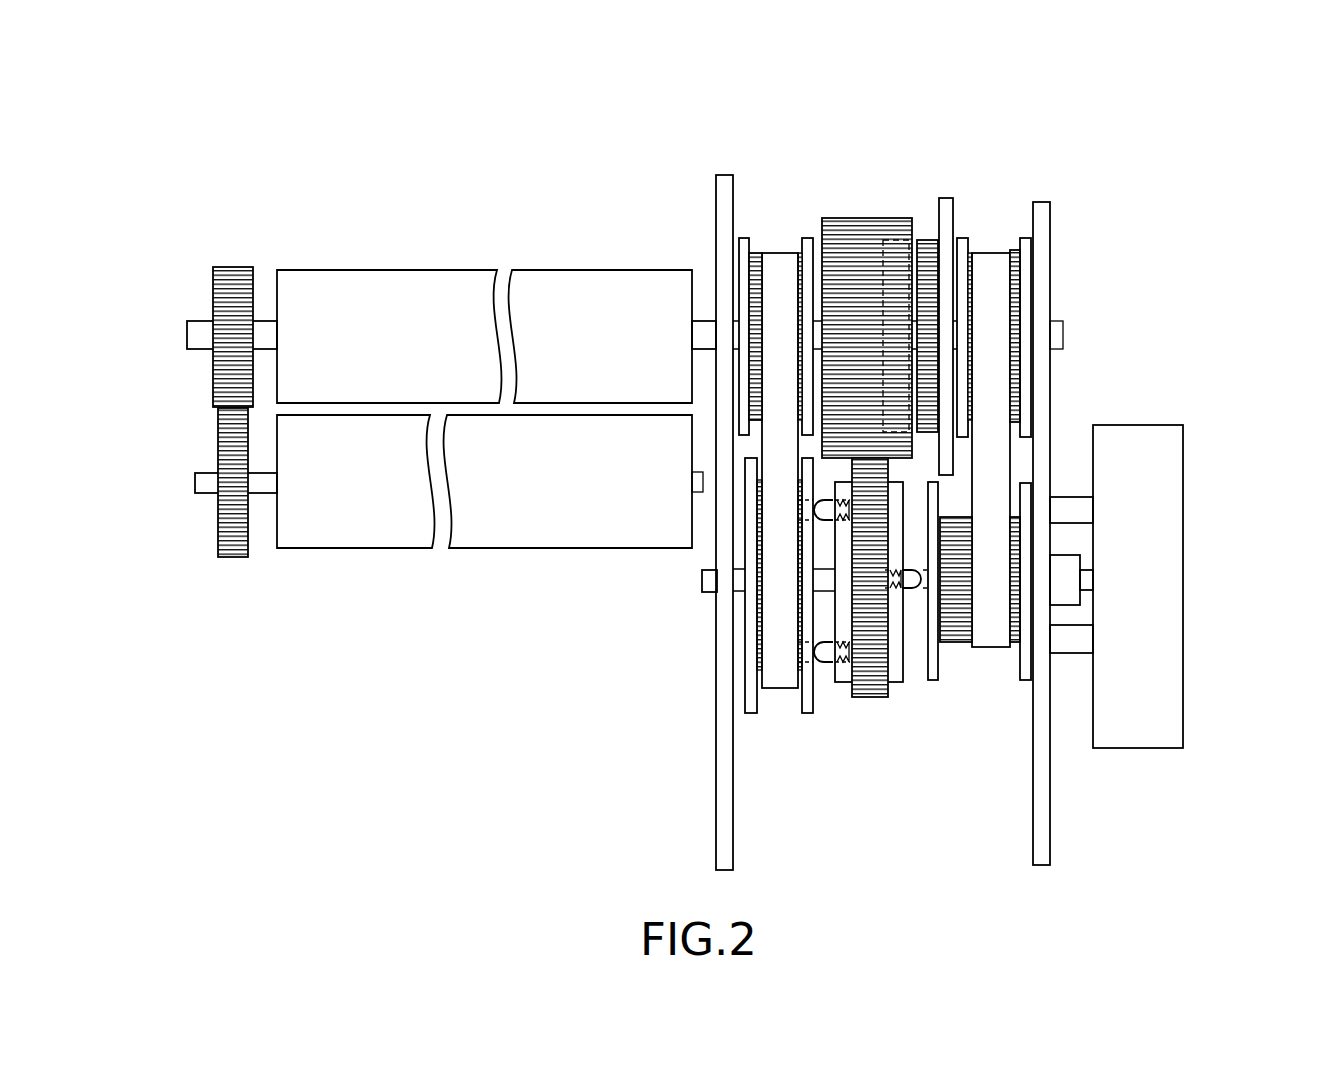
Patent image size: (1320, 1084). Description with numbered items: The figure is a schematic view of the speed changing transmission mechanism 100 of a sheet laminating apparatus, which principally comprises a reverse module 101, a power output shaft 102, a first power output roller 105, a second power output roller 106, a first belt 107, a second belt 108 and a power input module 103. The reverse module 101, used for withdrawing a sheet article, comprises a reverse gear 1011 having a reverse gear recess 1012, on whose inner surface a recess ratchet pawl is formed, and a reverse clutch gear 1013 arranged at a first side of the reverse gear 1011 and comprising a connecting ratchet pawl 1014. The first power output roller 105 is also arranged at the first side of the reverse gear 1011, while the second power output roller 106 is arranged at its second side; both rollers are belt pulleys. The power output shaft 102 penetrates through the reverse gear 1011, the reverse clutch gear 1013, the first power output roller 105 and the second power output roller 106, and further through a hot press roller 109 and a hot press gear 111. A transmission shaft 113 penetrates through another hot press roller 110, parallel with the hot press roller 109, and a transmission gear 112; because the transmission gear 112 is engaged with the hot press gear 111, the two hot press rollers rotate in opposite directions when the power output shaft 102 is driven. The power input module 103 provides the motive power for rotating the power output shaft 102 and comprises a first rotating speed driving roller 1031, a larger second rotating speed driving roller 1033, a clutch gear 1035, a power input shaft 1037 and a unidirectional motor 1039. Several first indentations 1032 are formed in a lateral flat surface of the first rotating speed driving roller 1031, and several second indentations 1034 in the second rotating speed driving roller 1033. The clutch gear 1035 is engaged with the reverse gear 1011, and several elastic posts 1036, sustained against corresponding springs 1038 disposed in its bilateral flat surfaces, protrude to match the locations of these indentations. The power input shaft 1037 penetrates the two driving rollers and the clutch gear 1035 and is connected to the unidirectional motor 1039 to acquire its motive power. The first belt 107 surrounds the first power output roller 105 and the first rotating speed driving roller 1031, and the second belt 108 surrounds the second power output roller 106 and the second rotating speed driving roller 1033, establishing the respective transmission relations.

The speed changing transmission mechanism 100 is at (660, 110).
The reverse module 101 is at (930, 281).
The reverse gear 1011 is at (850, 228).
The reverse gear recess 1012 is at (895, 257).
The reverse clutch gear 1013 is at (928, 255).
The connecting ratchet pawl 1014 is at (943, 255).
The power output shaft 102 is at (706, 328).
The power input module 103 is at (897, 616).
The first rotating speed driving roller 1031 is at (1018, 630).
The first indentations 1032 is at (930, 578).
The second rotating speed driving roller 1033 is at (755, 665).
The second indentations 1034 is at (813, 652).
The clutch gear 1035 is at (887, 650).
The elastic posts 1036 is at (820, 497).
The power input shaft 1037 is at (703, 575).
The springs 1038 is at (842, 522).
The unidirectional motor 1039 is at (1170, 508).
The first power output roller 105 is at (1013, 320).
The second power output roller 106 is at (756, 280).
The first belt 107 is at (997, 295).
The second belt 108 is at (780, 262).
The hot press roller 109 is at (405, 282).
The hot press roller 110 is at (355, 540).
The hot press gear 111 is at (232, 277).
The transmission gear 112 is at (230, 447).
The transmission shaft 113 is at (208, 480).